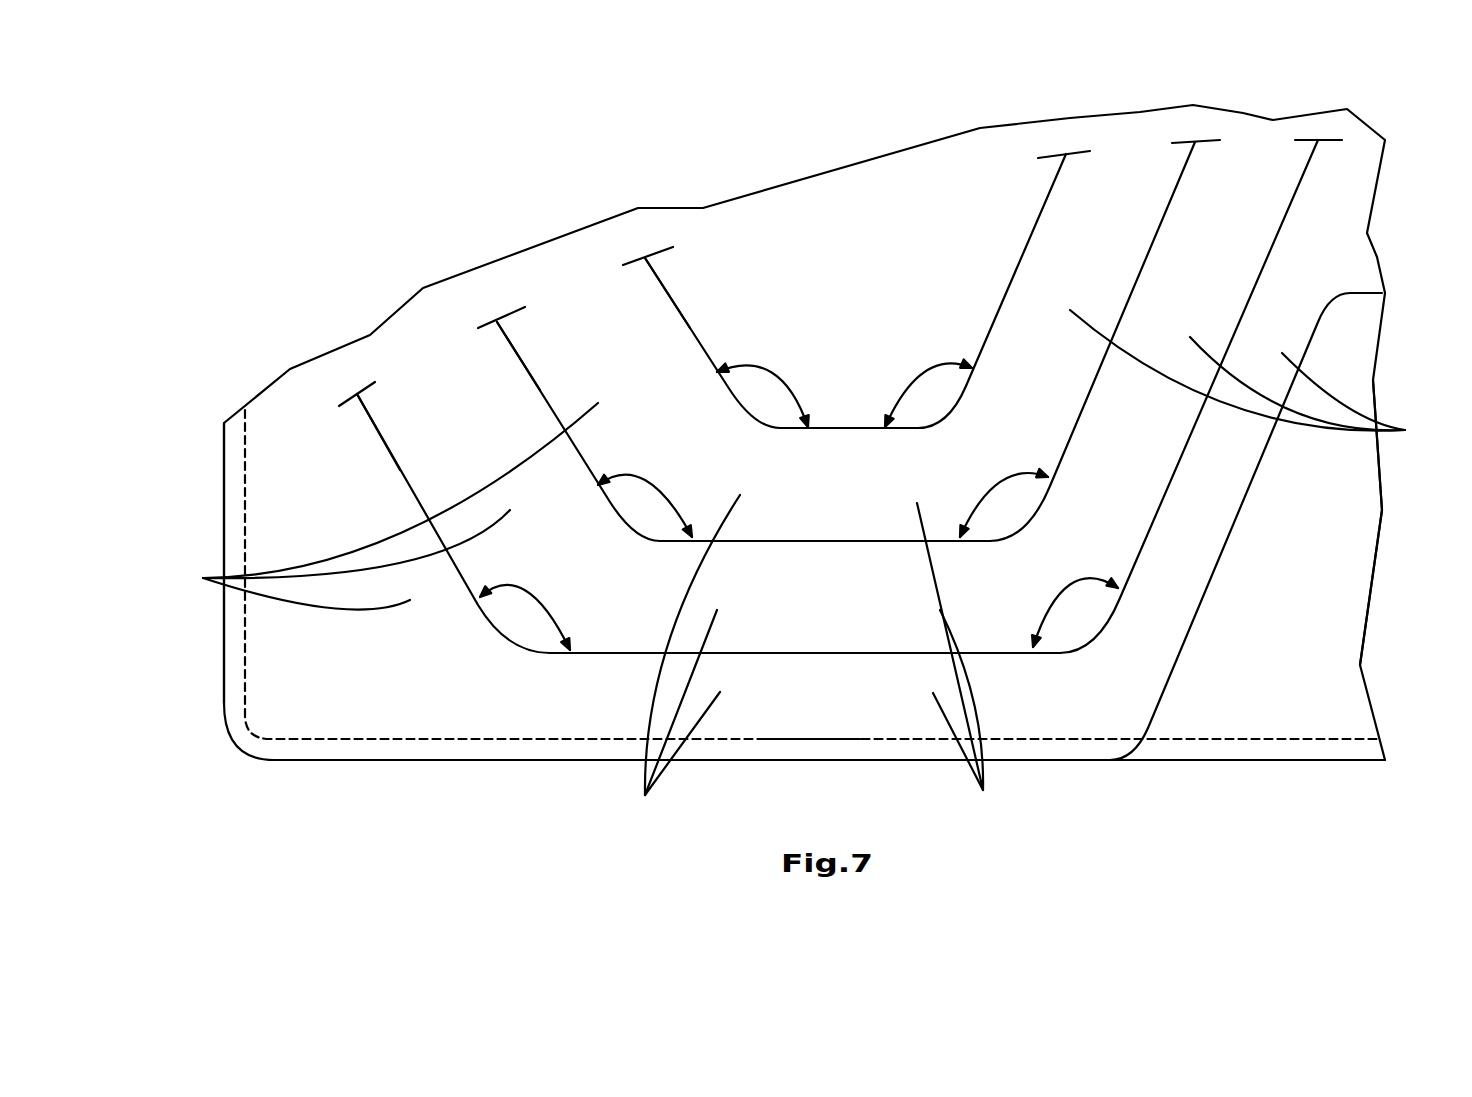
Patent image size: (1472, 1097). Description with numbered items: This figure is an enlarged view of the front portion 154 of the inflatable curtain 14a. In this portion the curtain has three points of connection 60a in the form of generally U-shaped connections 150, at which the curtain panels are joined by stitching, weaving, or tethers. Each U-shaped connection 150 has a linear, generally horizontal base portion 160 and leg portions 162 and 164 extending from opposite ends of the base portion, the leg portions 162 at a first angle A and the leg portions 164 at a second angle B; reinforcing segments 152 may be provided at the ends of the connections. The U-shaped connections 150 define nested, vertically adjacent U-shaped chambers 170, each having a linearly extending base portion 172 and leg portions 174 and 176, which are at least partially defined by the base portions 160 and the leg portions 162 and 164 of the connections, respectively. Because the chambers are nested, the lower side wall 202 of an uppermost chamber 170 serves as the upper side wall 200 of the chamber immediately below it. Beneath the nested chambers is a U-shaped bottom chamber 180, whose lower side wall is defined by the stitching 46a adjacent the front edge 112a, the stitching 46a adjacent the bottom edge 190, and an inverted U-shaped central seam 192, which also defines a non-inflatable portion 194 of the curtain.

The front portion 154 is at (708, 160).
The reinforcing segments 152 is at (362, 388).
The U-shaped connections 150 is at (395, 462).
The leg portions 162 is at (372, 428).
The base portion 160 is at (828, 428).
The upper side wall 200 is at (853, 428).
The lower side wall 202 is at (828, 537).
The points of connection 60a is at (867, 430).
The leg portions 164 is at (1010, 280).
The leg portions 176 is at (1405, 430).
The leg portions 174 is at (203, 578).
The U-shaped chambers 170 is at (682, 663).
The base portion 172 is at (960, 666).
The bottom chamber 180 is at (787, 688).
The bottom edge 190 is at (465, 760).
The stitching 46a is at (587, 740).
The inflatable curtain 14a is at (340, 703).
The front edge 112a is at (223, 467).
The central seam 192 is at (1193, 620).
The non-inflatable portion 194 is at (1298, 573).